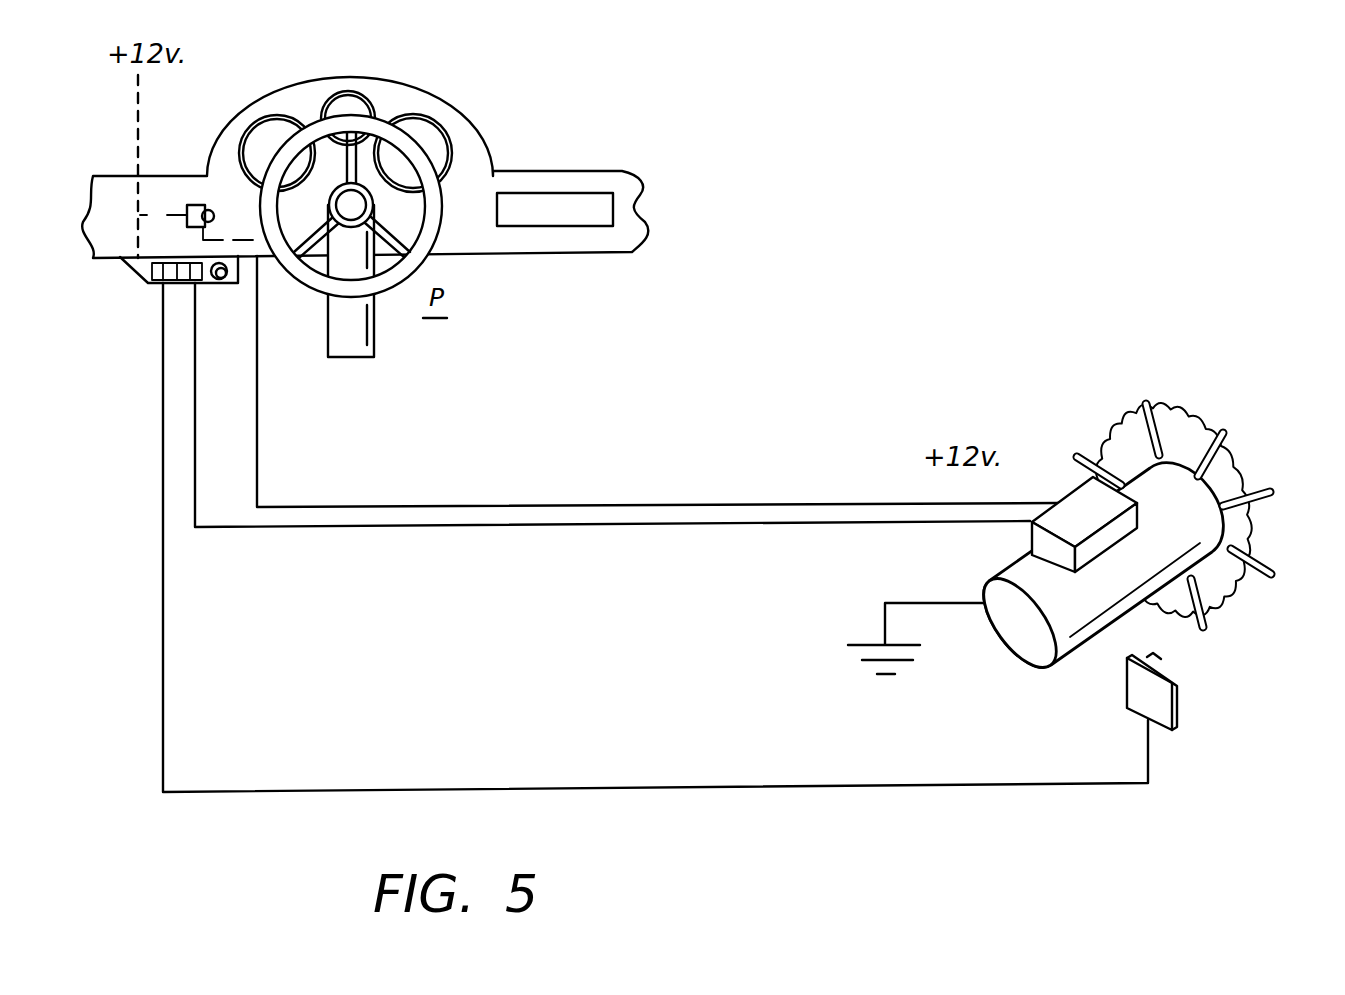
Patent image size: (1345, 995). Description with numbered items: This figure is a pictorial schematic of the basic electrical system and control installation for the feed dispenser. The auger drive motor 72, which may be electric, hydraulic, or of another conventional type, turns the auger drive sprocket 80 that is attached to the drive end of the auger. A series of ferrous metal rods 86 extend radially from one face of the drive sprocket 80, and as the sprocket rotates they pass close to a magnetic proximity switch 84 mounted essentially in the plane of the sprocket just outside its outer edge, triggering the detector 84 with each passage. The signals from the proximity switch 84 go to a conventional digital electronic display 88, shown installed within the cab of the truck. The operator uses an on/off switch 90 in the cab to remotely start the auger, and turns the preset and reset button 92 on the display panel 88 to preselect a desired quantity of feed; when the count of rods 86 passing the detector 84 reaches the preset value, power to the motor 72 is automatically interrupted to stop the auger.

The auger drive motor 72 is at (1117, 593).
The auger drive sprocket 80 is at (1233, 584).
The magnetic proximity switch 84 is at (1160, 660).
The ferrous metal rods 86 is at (1156, 403).
The digital electronic display 88 is at (156, 284).
The on/off switch 90 is at (204, 206).
The preset and reset button 92 is at (221, 282).